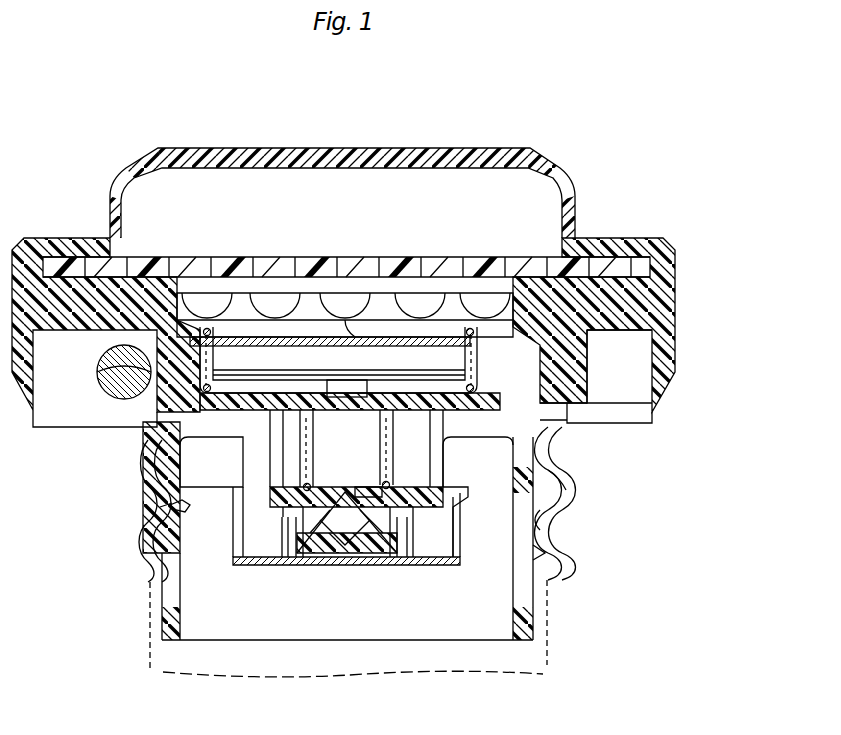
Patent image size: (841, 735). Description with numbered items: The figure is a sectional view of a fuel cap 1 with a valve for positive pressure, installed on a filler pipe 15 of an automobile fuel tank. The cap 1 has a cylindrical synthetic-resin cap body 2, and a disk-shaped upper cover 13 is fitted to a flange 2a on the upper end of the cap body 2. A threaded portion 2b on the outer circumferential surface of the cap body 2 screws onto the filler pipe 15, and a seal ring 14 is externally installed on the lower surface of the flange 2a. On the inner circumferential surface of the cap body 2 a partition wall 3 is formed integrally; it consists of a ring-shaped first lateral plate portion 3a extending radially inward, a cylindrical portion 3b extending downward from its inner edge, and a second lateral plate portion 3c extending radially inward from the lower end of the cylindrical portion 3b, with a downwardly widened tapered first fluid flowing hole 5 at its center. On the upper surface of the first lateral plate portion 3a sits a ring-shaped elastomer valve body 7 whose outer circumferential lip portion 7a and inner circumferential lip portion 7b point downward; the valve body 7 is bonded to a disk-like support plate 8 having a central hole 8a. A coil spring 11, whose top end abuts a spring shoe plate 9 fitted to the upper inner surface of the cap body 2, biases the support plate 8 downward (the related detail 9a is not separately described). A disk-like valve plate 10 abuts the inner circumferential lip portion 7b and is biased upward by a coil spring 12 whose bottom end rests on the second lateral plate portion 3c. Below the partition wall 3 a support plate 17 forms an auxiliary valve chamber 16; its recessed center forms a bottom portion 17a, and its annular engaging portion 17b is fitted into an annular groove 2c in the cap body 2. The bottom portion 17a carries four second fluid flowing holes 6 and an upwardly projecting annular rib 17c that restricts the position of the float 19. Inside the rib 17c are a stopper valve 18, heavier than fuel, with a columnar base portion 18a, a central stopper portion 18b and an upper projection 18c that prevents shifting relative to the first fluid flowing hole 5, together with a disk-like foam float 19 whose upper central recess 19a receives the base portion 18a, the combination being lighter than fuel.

The cap 1 is at (482, 110).
The cap body 2 is at (527, 592).
The flange 2a is at (610, 320).
The threaded portion 2b is at (537, 548).
The annular groove 2c is at (170, 548).
The partition wall 3 is at (467, 452).
The first lateral plate portion 3a is at (180, 460).
The cylindrical portion 3b is at (557, 515).
The second lateral plate portion 3c is at (243, 520).
The first fluid flowing hole 5 is at (367, 503).
The second fluid flowing holes 6 is at (245, 563).
The valve body 7 is at (195, 428).
The outer circumferential lip portion 7a is at (555, 433).
The inner circumferential lip portion 7b is at (313, 430).
The support plate 8 is at (403, 397).
The hole 8a is at (348, 397).
The spring shoe plate 9 is at (268, 318).
The spring retainer arc 9a is at (360, 320).
The valve plate 10 is at (340, 420).
The coil spring 11 is at (240, 300).
The coil spring 12 is at (460, 498).
The upper cover 13 is at (207, 162).
The seal ring 14 is at (140, 375).
The filler pipe 15 is at (567, 490).
The auxiliary valve chamber 16 is at (433, 540).
The support plate 17 is at (192, 570).
The bottom portion 17a is at (317, 562).
The engaging portion 17b is at (173, 508).
The rib 17c is at (277, 565).
The stopper valve 18 is at (386, 514).
The base portion 18a is at (390, 562).
The stopper portion 18b is at (317, 562).
The projection 18c is at (360, 562).
The float 19 is at (420, 562).
The recess 19a is at (387, 562).